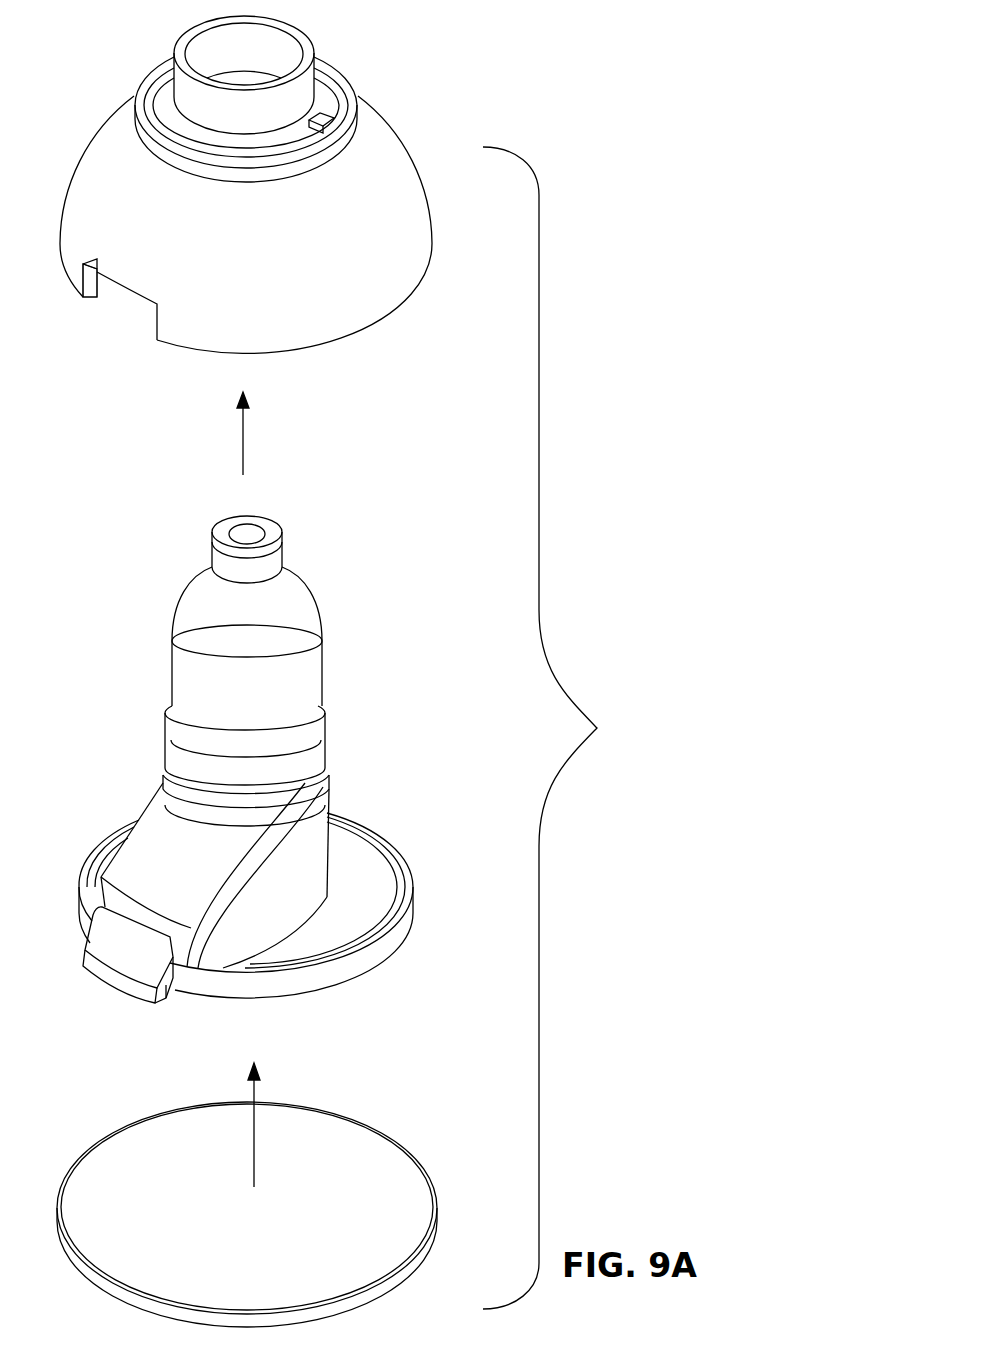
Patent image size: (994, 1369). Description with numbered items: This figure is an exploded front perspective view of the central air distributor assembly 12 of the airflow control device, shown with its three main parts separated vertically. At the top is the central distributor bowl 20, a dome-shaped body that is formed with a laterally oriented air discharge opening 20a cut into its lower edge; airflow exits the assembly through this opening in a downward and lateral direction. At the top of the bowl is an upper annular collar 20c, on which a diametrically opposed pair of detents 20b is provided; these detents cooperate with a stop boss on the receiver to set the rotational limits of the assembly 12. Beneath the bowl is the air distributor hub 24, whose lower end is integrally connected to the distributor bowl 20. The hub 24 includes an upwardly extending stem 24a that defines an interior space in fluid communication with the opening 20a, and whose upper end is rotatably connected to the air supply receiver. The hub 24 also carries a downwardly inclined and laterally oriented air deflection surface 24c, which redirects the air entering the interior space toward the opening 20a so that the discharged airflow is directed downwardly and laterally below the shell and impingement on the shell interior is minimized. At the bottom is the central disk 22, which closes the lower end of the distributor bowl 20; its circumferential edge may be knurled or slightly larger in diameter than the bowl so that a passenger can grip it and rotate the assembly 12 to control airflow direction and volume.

The central air distributor assembly 12 is at (570, 700).
The central distributor bowl 20 is at (286, 253).
The air discharge opening 20a is at (110, 302).
The detents 20b is at (322, 118).
The upper annular collar 20c is at (337, 58).
The central disk 22 is at (188, 1218).
The air distributor hub 24 is at (322, 683).
The stem 24a is at (280, 697).
The air deflection surface 24c is at (123, 968).